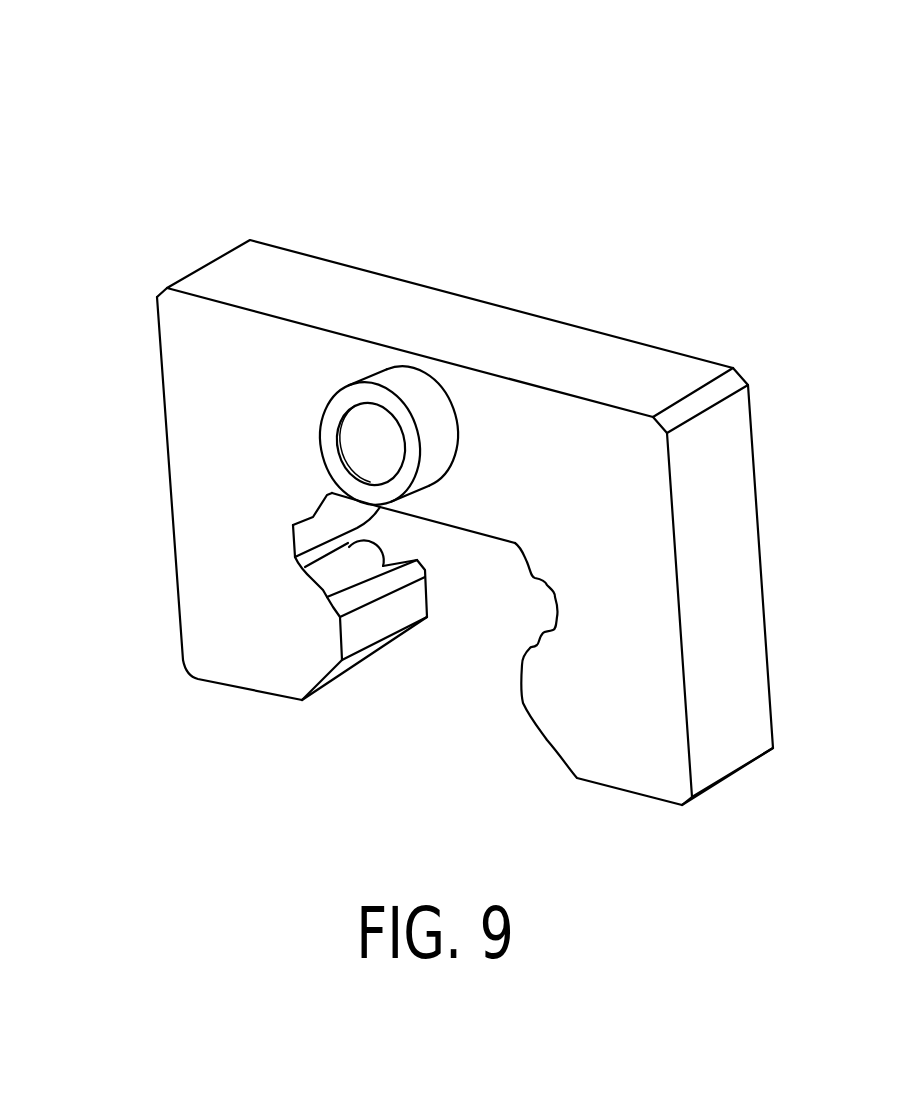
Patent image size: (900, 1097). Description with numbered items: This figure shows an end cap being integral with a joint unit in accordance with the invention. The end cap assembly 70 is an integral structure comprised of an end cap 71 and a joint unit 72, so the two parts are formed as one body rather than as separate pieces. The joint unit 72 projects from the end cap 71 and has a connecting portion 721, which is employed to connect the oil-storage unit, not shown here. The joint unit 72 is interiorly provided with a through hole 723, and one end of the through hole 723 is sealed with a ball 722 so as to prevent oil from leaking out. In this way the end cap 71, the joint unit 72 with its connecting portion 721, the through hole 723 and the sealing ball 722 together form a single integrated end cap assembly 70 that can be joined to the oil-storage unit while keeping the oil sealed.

The end cap assembly 70 is at (160, 207).
The end cap 71 is at (730, 625).
The joint unit 72 is at (450, 404).
The connecting portion 721 is at (333, 431).
The ball 722 is at (372, 430).
The through hole 723 is at (340, 467).